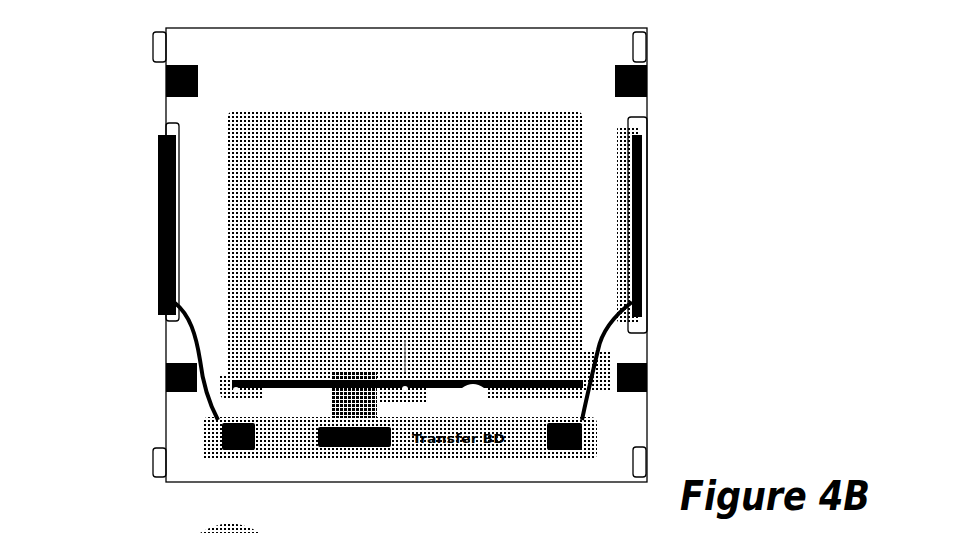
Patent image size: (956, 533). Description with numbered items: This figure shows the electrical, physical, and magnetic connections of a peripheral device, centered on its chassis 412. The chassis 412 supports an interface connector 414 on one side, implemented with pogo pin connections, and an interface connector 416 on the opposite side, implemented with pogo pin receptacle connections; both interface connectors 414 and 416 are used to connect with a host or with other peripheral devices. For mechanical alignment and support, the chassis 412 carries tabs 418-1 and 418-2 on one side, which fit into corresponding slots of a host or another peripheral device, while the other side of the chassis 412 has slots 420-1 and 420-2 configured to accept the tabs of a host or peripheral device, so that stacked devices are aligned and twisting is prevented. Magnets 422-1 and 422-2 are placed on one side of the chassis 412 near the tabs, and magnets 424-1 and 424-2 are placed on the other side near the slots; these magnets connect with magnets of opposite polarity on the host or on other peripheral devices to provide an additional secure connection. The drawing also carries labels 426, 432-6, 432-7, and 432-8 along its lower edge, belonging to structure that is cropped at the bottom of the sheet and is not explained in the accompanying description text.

The chassis 412 is at (752, 108).
The interface connector 414 is at (158, 228).
The interface connector 416 is at (648, 212).
The tab 418-1 is at (157, 50).
The tab 418-2 is at (160, 462).
The slot 420-1 is at (650, 50).
The slot 420-2 is at (645, 465).
The magnet 422-1 is at (168, 80).
The magnet 422-2 is at (167, 372).
The magnet 424-1 is at (648, 86).
The magnet 424-2 is at (647, 385).
The lower component 426 is at (164, 525).
The element 432-6 is at (492, 528).
The element 432-7 is at (576, 532).
The element 432-8 is at (613, 515).